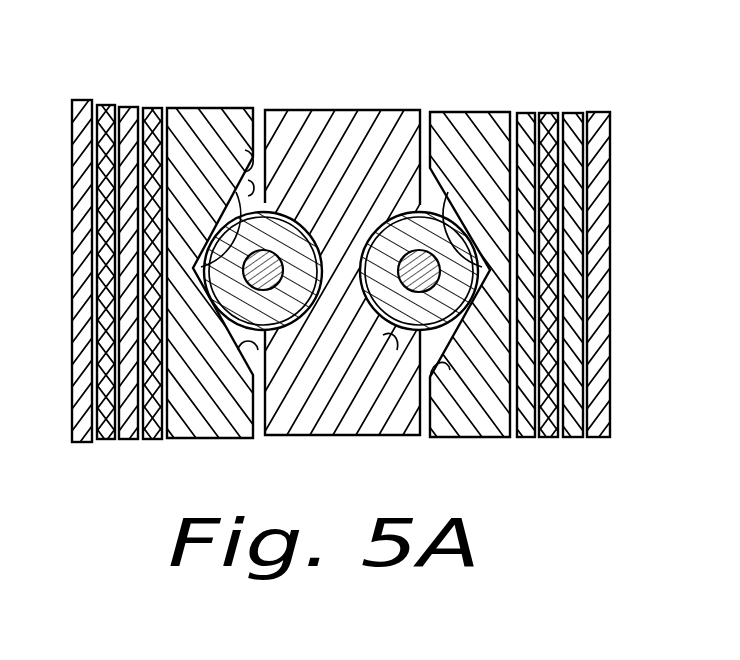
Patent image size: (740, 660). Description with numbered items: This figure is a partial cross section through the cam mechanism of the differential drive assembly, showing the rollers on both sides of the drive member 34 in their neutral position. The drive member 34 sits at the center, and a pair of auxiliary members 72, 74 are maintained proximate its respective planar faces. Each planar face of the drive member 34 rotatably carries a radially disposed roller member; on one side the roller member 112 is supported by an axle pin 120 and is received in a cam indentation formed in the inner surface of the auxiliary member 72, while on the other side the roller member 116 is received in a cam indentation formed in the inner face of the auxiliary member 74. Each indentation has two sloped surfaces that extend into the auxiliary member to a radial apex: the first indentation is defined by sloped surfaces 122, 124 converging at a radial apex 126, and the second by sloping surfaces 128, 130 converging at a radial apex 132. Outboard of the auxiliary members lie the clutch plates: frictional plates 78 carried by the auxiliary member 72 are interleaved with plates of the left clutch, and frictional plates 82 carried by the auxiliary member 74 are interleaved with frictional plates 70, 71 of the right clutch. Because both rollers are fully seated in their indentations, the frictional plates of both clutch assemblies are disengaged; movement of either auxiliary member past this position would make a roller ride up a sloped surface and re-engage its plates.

The drive member 34 is at (307, 110).
The frictional plates 70 is at (153, 106).
The frictional plates 71 is at (598, 112).
The auxiliary member 72 is at (210, 108).
The auxiliary member 74 is at (463, 110).
The frictional plates 78 is at (83, 442).
The frictional plates 82 is at (602, 437).
The roller member 112 is at (293, 213).
The roller member 116 is at (397, 333).
The axle pin 120 is at (321, 206).
The sloped surface 122 is at (272, 352).
The sloped surface 124 is at (245, 150).
The radial apex 126 is at (248, 187).
The sloped surface 128 is at (415, 368).
The sloped surface 130 is at (367, 173).
The radial apex 132 is at (448, 192).